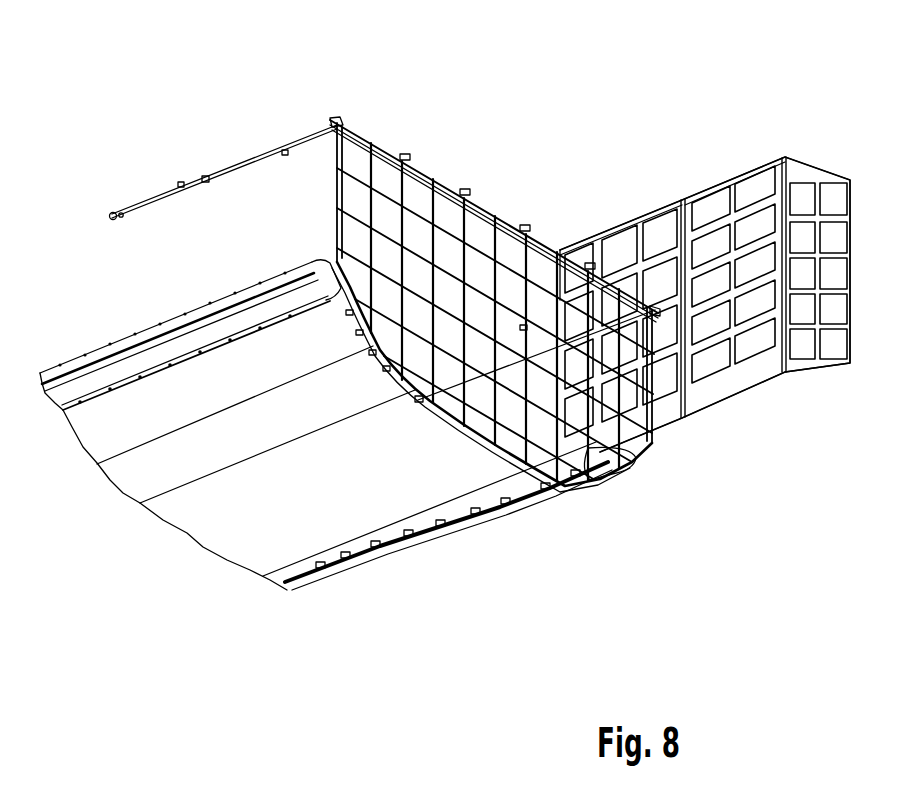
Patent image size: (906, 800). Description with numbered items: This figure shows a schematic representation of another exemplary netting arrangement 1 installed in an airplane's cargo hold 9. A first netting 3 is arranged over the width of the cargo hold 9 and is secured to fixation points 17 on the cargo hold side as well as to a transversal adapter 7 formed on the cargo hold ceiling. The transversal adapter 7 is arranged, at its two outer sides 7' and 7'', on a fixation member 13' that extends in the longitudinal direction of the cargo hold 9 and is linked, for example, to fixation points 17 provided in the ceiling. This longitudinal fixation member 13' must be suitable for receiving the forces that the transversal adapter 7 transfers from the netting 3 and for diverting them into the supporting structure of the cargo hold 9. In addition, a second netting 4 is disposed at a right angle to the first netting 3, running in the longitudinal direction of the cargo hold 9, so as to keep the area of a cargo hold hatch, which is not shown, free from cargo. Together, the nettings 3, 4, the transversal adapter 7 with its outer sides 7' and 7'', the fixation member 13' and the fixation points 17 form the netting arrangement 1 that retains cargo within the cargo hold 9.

The netting arrangement 1 is at (572, 156).
The first netting 3 is at (335, 200).
The second netting 4 is at (712, 188).
The transversal adapter 7 is at (494, 205).
The outer side of the transversal adapter 7' is at (354, 83).
The outer side of the transversal adapter 7'' is at (695, 381).
The cargo hold 9 is at (242, 526).
The longitudinal fixation member 13' is at (224, 155).
The fixation points on the cargo hold side 17 is at (206, 178).